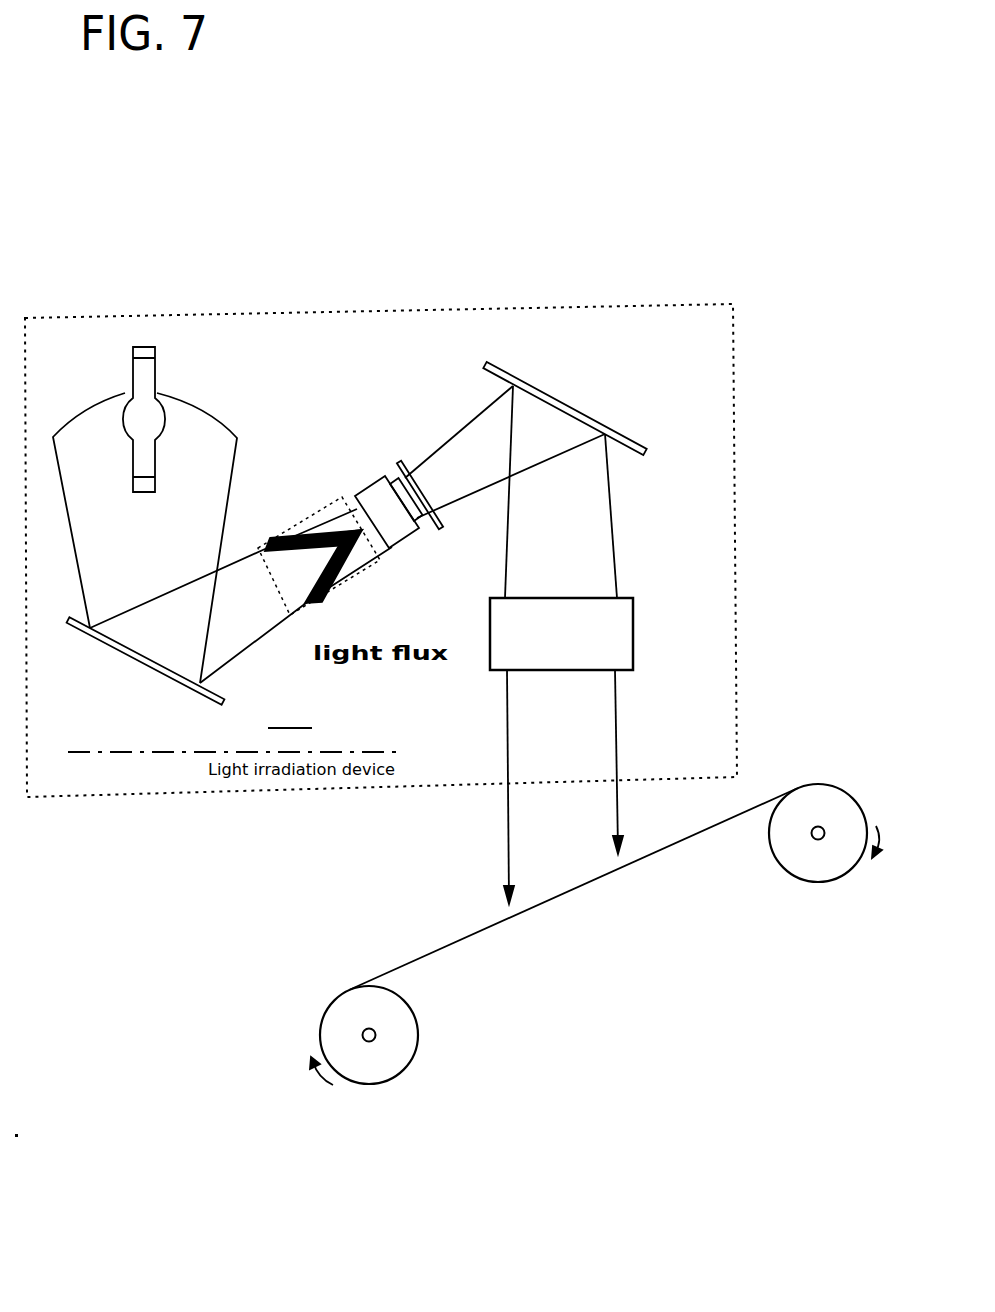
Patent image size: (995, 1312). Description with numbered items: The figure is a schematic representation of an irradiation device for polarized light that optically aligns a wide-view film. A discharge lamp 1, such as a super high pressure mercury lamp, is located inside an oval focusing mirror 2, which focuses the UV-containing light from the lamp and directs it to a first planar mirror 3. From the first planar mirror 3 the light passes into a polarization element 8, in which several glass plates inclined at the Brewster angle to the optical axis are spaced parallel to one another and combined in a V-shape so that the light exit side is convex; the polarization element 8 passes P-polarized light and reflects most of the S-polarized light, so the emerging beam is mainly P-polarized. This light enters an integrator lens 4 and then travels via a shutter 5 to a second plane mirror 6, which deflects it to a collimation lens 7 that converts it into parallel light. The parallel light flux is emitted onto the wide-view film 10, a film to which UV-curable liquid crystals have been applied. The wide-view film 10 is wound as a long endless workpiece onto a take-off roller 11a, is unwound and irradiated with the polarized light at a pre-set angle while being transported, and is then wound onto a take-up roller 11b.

The discharge lamp 1 is at (155, 368).
The oval focusing mirror 2 is at (226, 418).
The first planar mirror 3 is at (147, 668).
The integrator lens 4 is at (368, 482).
The shutter 5 is at (415, 462).
The second plane mirror 6 is at (623, 430).
The collimation lens 7 is at (635, 608).
The polarization element 8 is at (352, 580).
The wide-view film 10 is at (426, 952).
The take-off roller 11a is at (395, 1075).
The take-up roller 11b is at (802, 873).